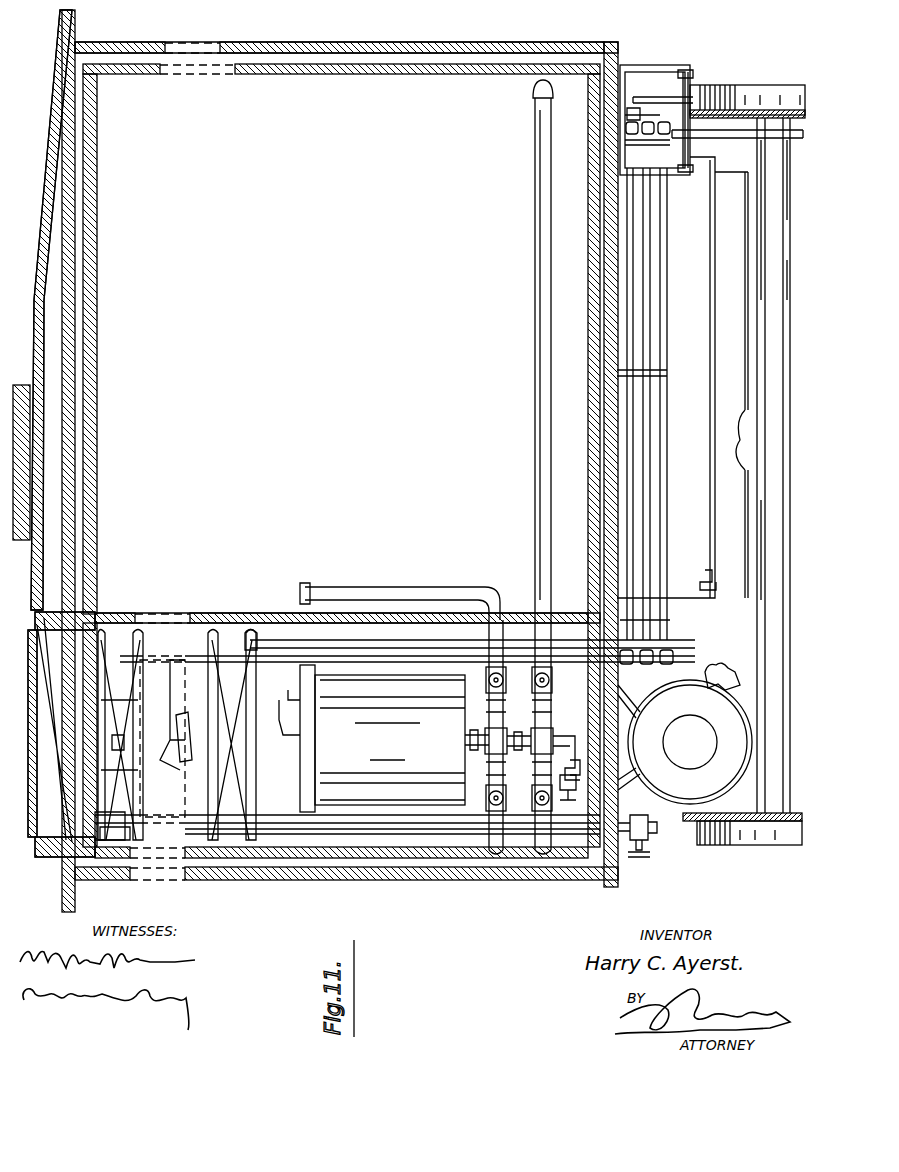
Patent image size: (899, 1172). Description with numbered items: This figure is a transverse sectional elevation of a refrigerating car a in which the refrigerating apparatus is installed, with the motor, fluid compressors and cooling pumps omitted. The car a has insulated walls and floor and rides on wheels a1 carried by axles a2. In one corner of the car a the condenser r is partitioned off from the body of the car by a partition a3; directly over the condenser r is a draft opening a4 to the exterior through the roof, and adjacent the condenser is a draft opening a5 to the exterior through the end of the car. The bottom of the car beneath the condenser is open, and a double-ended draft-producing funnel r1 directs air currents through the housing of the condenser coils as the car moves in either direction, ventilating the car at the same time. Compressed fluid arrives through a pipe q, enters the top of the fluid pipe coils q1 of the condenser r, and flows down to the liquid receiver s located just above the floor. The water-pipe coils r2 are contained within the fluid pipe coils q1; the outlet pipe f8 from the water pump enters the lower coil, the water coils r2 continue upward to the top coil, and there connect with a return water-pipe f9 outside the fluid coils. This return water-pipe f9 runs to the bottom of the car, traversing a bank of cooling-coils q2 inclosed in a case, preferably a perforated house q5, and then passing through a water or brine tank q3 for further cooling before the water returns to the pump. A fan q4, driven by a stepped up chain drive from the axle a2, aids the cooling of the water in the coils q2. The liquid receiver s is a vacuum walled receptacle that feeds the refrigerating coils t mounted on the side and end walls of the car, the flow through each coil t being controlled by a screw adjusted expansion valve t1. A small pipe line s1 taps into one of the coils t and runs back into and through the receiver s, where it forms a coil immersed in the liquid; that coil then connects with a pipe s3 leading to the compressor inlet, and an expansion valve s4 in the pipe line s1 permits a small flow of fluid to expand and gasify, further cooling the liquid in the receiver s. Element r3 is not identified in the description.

The refrigerating car a is at (140, 42).
The wheels a1 is at (760, 90).
The axles a2 is at (768, 455).
The partition a3 is at (207, 615).
The draft opening a4 is at (55, 840).
The draft opening a5 is at (120, 640).
The outlet pipe f8 is at (682, 645).
The return water-pipe f9 is at (283, 655).
The pipe q is at (428, 825).
The fluid pipe coils q1 is at (232, 858).
The cooling-coils q2 is at (650, 345).
The water or brine tank q3 is at (666, 377).
The fan q4 is at (650, 97).
The perforated house q5 is at (716, 603).
The condenser r is at (175, 735).
The draft-producing funnel r1 is at (713, 695).
The water-pipe coils r2 is at (178, 728).
The coil fitting r3 is at (150, 745).
The liquid receiver s is at (394, 738).
The small pipe line s1 is at (568, 735).
The pipe s3 is at (281, 708).
The expansion valve s4 is at (569, 792).
The refrigerating coils t is at (535, 420).
The expansion valve t1 is at (519, 739).